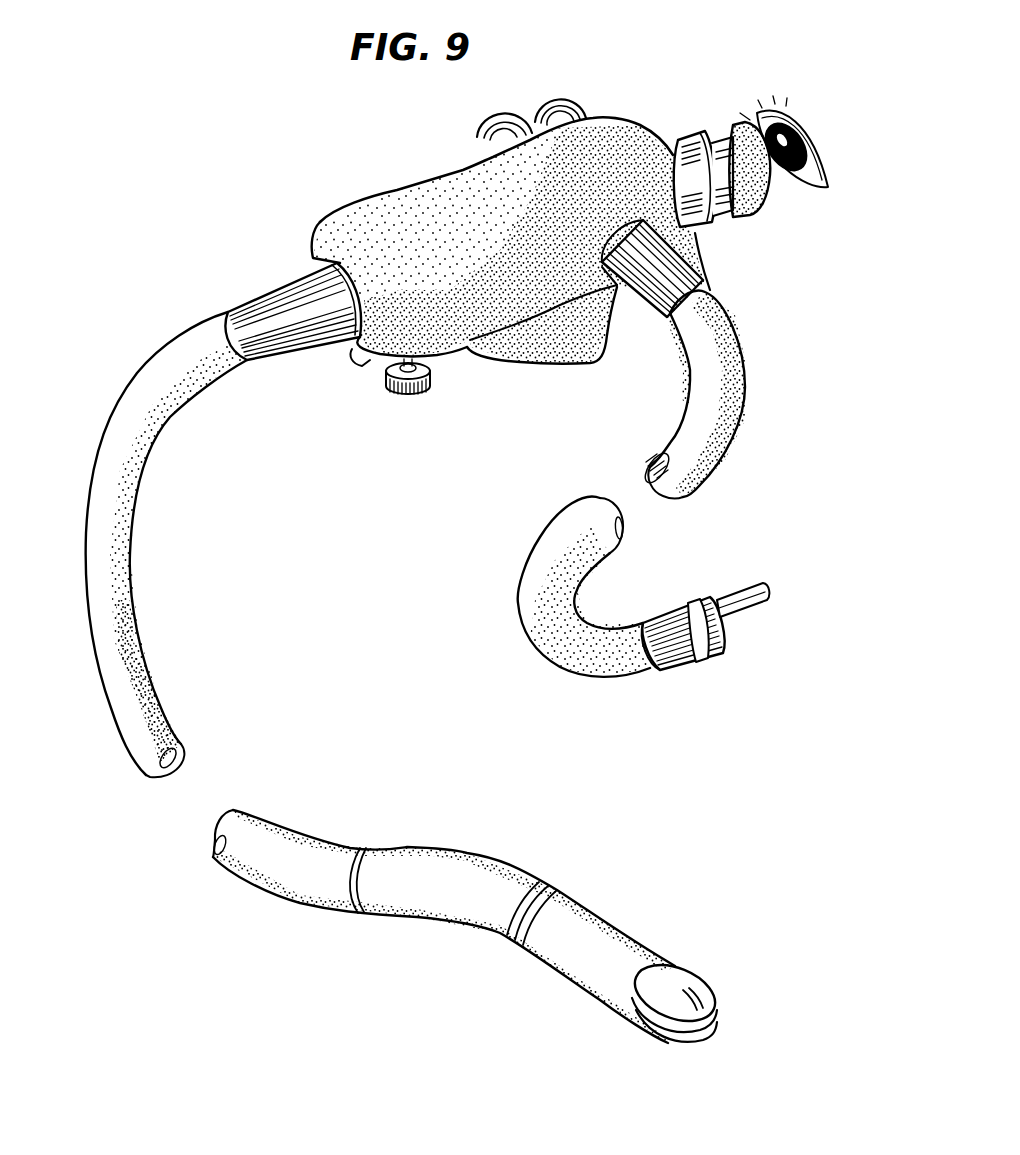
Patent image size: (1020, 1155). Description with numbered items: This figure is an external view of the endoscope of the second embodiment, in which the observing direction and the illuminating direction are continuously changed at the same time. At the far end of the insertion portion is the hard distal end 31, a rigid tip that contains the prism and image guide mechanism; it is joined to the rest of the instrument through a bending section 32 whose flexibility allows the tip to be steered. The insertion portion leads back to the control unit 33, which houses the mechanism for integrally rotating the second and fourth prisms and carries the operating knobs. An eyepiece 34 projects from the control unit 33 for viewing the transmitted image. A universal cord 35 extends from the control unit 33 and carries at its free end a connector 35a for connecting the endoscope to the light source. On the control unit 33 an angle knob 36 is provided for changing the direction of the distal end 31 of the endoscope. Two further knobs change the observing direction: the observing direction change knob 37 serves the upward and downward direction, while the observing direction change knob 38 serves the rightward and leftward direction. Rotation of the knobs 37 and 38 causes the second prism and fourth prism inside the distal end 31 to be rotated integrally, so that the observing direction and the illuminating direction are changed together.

The hard distal end 31 is at (622, 933).
The bending section 32 is at (470, 853).
The control unit 33 is at (403, 207).
The eyepiece 34 is at (743, 213).
The universal cord 35 is at (745, 373).
The connector 35a is at (731, 592).
The angle knob 36 is at (597, 363).
The observing direction change knob for upward and downward direction 37 is at (430, 380).
The observing direction change knob for rightward and leftward direction 38 is at (360, 363).